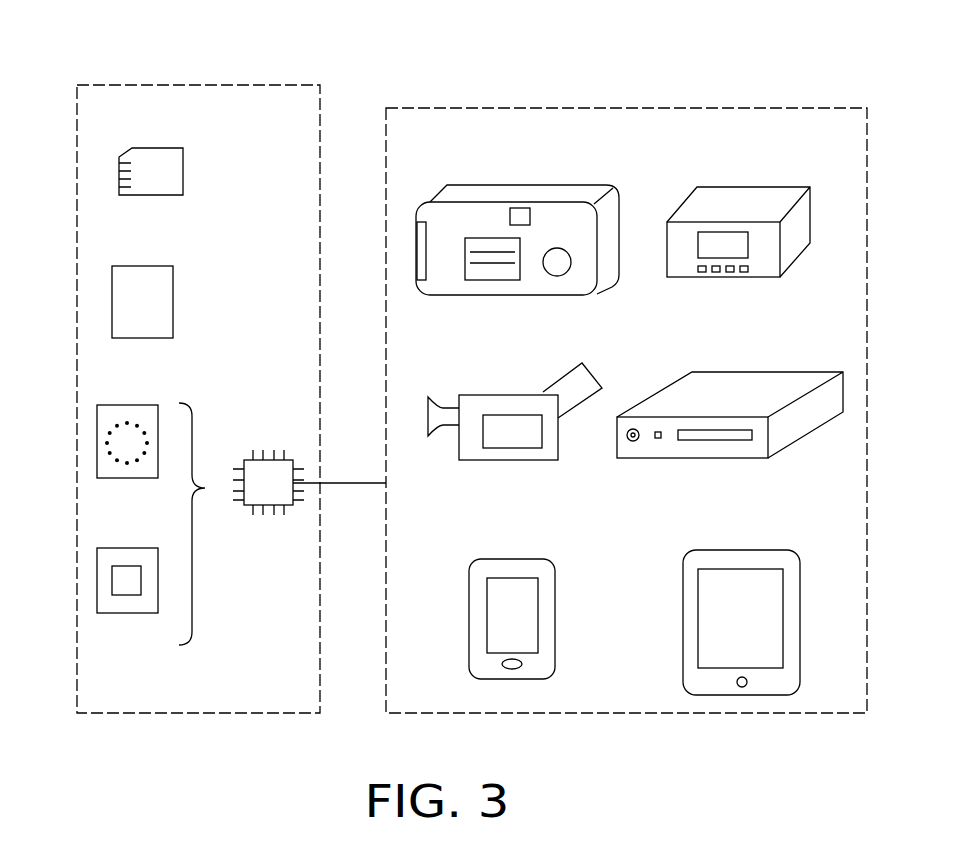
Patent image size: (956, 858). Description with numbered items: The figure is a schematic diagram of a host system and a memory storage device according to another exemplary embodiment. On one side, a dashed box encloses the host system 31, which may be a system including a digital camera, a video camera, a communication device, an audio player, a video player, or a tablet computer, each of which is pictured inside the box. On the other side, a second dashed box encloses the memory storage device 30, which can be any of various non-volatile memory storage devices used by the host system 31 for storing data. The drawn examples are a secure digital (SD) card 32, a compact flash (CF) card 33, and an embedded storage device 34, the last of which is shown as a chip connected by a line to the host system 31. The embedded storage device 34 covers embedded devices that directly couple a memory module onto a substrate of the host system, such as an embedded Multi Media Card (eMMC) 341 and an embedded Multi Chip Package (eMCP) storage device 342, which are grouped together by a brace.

The memory storage device 30 is at (205, 85).
The host system 31 is at (621, 108).
The secure digital (SD) card 32 is at (119, 181).
The compact flash (CF) card 33 is at (112, 305).
The embedded Multi Media Card (eMMC) 341 is at (97, 445).
The embedded Multi Chip Package (eMCP) storage device 342 is at (97, 582).
The embedded storage device 34 is at (268, 458).